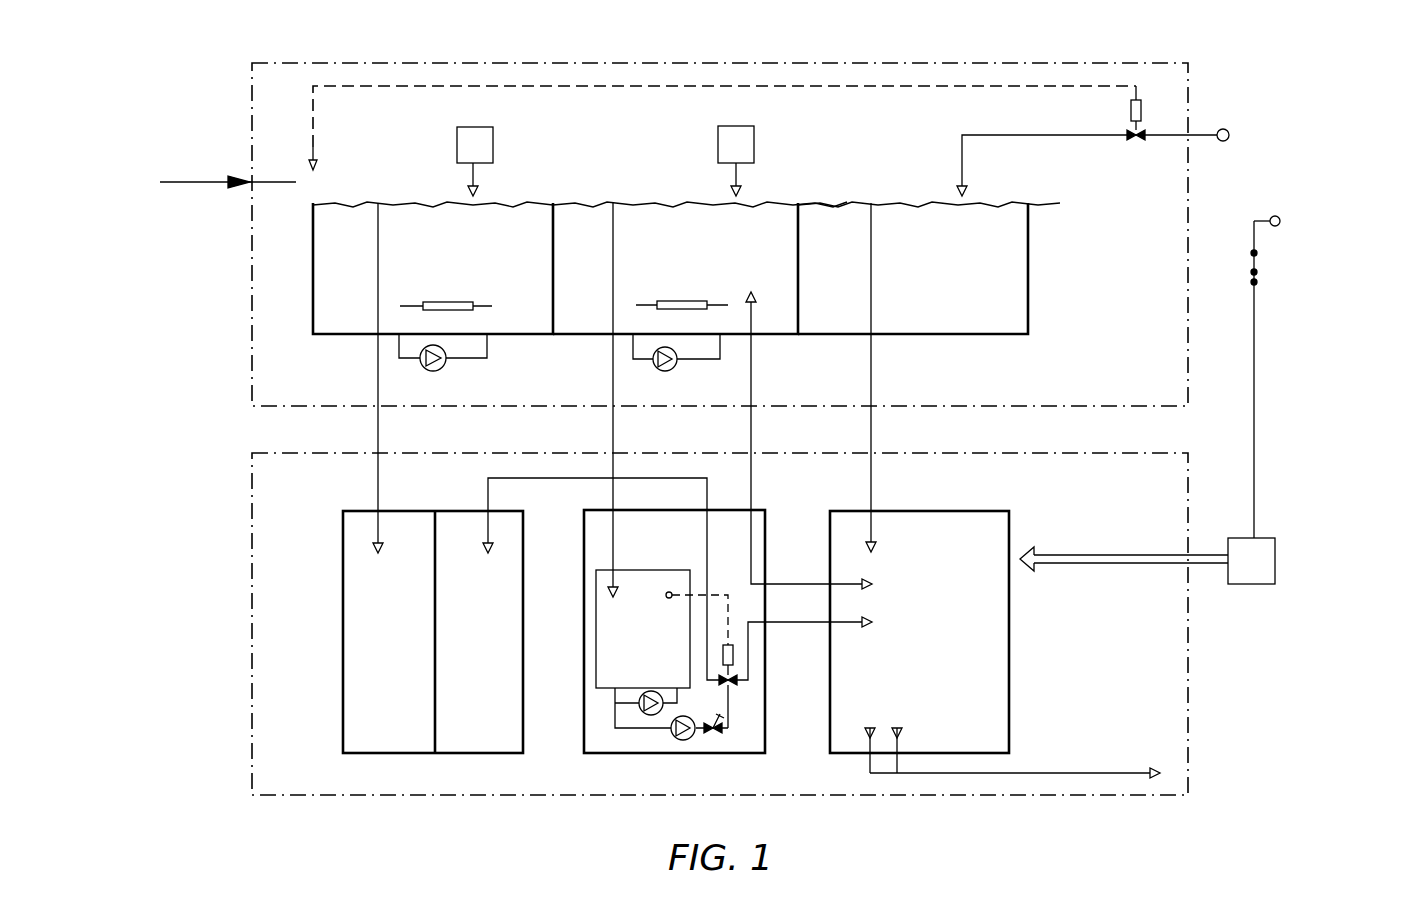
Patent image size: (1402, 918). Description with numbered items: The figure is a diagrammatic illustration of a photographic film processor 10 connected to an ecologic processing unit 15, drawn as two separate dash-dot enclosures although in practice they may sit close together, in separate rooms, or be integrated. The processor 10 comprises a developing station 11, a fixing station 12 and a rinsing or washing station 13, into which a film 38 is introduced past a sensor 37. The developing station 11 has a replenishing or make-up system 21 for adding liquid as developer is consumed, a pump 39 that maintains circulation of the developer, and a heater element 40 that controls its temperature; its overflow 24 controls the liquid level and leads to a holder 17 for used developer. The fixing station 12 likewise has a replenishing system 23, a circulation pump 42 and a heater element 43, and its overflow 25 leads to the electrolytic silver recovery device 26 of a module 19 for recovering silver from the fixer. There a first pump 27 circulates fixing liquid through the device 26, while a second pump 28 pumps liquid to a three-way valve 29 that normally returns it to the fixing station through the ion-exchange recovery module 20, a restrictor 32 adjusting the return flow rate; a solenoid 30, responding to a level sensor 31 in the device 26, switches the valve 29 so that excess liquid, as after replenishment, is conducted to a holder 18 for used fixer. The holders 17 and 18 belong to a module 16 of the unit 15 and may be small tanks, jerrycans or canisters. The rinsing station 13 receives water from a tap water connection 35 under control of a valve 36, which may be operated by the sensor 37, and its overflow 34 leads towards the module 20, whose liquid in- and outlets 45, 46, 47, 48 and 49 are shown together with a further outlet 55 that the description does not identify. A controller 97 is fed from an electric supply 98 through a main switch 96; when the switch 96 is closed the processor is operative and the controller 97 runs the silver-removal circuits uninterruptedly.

The photographic film processor 10 is at (252, 318).
The developing station 11 is at (462, 246).
The fixing station 12 is at (706, 246).
The rinsing or washing station 13 is at (964, 246).
The ecologic processing unit 15 is at (252, 604).
The module 16 is at (433, 666).
The holder for used developer 17 is at (402, 656).
The holder for used fixer 18 is at (490, 656).
The module for the recovery of silver from the fixer liquid 19 is at (680, 667).
The module for the recovery of silver from the rinsing water 20 is at (995, 667).
The replenishing or make-up system 21 is at (490, 134).
The replenishing system 23 is at (744, 134).
The overflow 24 is at (374, 205).
The overflow 25 is at (610, 205).
The electrolytic silver recovery device 26 is at (666, 656).
The first pump 27 is at (642, 714).
The second pump 28 is at (678, 740).
The three-way valve 29 is at (732, 686).
The solenoid 30 is at (733, 655).
The level sensor 31 is at (669, 592).
The restrictor 32 is at (712, 736).
The overflow 34 is at (868, 205).
The tap water connection 35 is at (1228, 130).
The valve 36 is at (1132, 134).
The sensor 37 is at (316, 142).
The film 38 is at (228, 182).
The pump 39 is at (444, 354).
The heater element 40 is at (455, 302).
The pump 42 is at (664, 371).
The heater element 43 is at (683, 301).
The liquid inlet/outlet 45 is at (876, 548).
The liquid inlet/outlet 46 is at (874, 624).
The liquid inlet/outlet 47 is at (874, 582).
The liquid inlet/outlet 48 is at (870, 728).
The liquid inlet/outlet 49 is at (900, 728).
The drain line 55 is at (1050, 772).
The switch 96 is at (1254, 253).
The controller 97 is at (1262, 553).
The electric supply 98 is at (1280, 218).